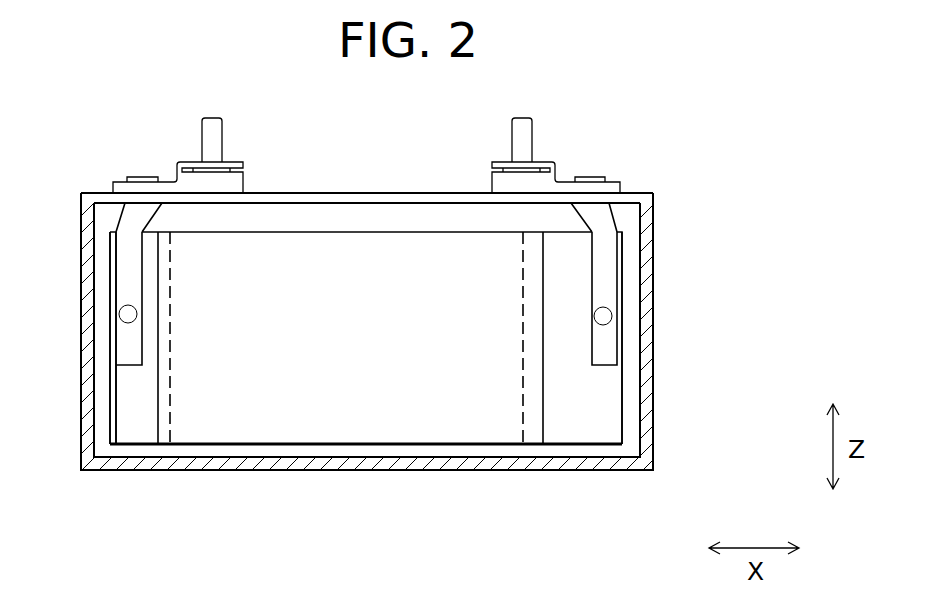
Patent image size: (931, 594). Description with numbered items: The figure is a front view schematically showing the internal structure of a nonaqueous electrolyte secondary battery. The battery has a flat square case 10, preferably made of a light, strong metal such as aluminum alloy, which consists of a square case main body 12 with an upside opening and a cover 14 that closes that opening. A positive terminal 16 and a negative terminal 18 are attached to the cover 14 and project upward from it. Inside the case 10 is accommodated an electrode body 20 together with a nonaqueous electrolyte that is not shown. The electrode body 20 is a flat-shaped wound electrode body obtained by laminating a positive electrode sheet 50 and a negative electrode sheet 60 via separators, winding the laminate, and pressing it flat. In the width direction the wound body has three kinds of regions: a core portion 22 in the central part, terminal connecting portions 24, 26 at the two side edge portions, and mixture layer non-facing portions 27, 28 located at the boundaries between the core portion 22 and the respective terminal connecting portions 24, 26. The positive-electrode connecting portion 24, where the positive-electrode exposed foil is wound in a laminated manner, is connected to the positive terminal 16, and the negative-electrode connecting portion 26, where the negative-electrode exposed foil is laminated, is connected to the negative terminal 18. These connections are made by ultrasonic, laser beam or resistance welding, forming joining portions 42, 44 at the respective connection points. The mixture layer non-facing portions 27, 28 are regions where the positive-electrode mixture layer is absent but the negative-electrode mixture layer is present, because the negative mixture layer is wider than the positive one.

The case 10 is at (460, 317).
The case main body 12 is at (653, 212).
The cover 14 is at (653, 195).
The positive terminal 16 is at (182, 151).
The negative terminal 18 is at (548, 148).
The electrode body 20 is at (345, 265).
The core portion 22 is at (331, 415).
The terminal connecting portion (positive-electrode connecting portion) 24 is at (121, 384).
The positive electrode sheet 50 is at (128, 420).
The terminal connecting portion (negative-electrode connecting portion) 26 is at (606, 384).
The negative electrode sheet 60 is at (580, 412).
The mixture layer non-facing portion 27 is at (167, 447).
The mixture layer non-facing portion 28 is at (532, 418).
The joining portion 42 is at (119, 311).
The joining portion 44 is at (612, 316).